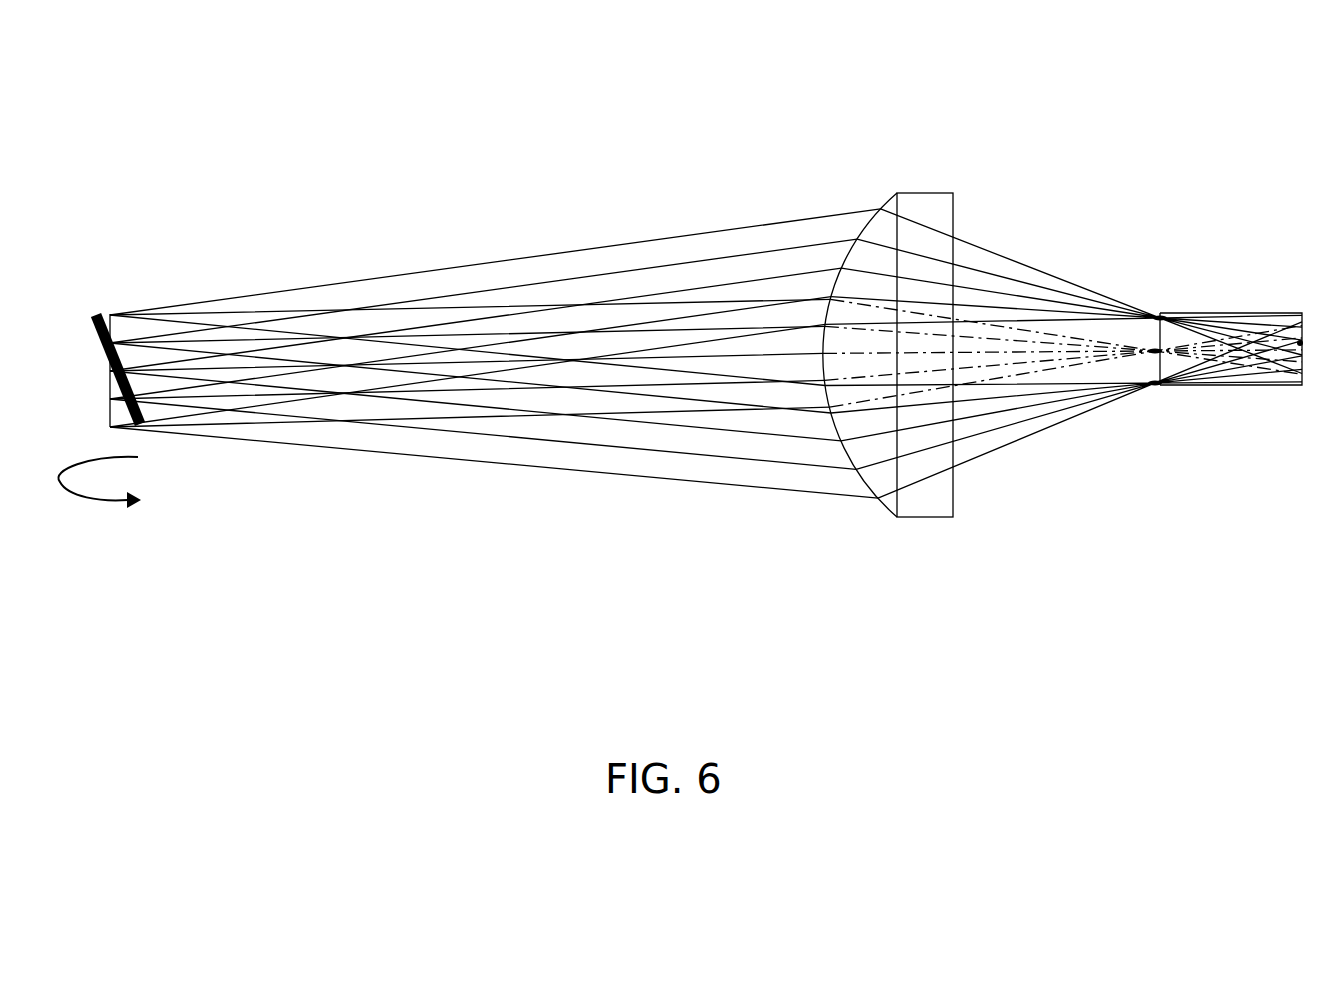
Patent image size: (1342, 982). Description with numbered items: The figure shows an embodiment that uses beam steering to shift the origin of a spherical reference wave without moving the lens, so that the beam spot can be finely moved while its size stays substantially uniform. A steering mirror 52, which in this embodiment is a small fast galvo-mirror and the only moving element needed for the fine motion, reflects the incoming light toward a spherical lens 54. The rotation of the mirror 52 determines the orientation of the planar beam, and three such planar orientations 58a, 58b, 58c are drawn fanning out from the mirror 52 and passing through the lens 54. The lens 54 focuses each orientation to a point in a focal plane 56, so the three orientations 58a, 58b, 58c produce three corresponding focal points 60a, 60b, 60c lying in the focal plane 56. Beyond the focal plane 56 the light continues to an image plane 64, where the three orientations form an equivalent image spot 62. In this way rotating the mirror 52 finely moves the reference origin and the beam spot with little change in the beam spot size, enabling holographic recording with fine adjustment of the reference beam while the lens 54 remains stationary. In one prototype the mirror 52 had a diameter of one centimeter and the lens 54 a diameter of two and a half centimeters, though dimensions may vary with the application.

The steering mirror 52 is at (87, 332).
The spherical lens 54 is at (905, 195).
The focal plane 56 is at (1164, 317).
The planar orientation 58a is at (232, 297).
The planar orientation 58b is at (281, 312).
The planar orientation 58c is at (402, 455).
The focal point 60a is at (1162, 317).
The focal point 60b is at (1156, 354).
The focal point 60c is at (1162, 386).
The image spot 62 is at (1302, 343).
The image plane 64 is at (1304, 362).